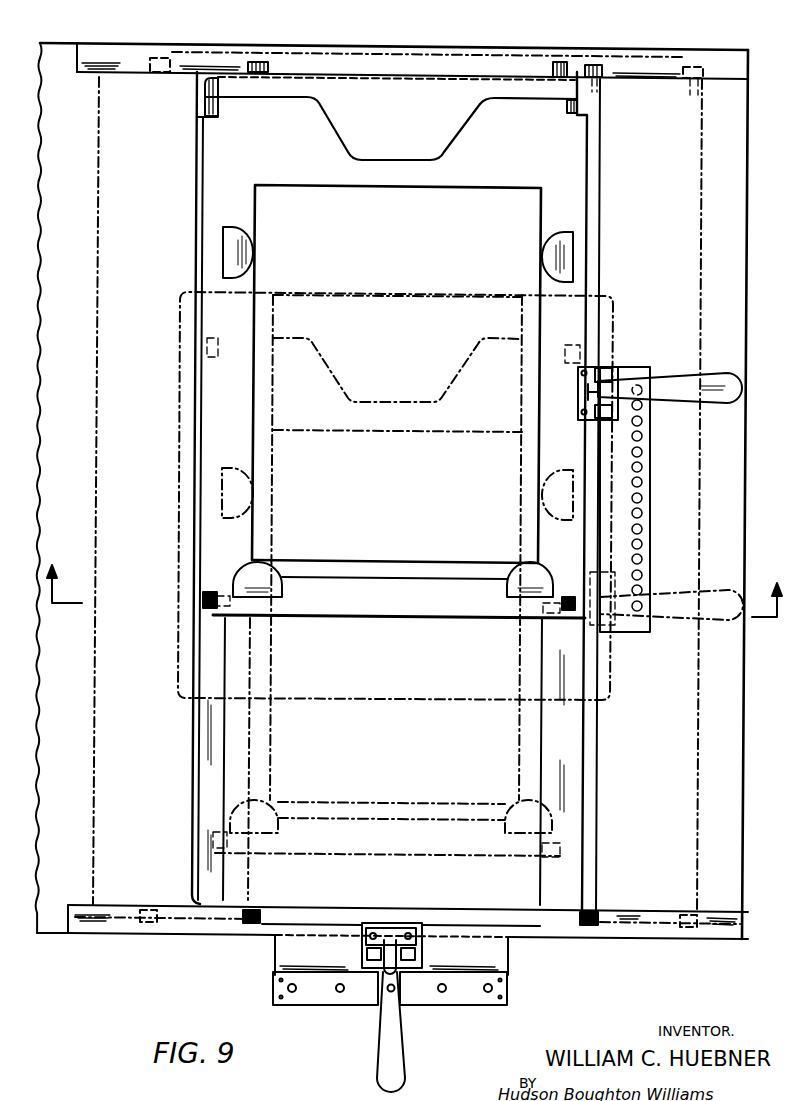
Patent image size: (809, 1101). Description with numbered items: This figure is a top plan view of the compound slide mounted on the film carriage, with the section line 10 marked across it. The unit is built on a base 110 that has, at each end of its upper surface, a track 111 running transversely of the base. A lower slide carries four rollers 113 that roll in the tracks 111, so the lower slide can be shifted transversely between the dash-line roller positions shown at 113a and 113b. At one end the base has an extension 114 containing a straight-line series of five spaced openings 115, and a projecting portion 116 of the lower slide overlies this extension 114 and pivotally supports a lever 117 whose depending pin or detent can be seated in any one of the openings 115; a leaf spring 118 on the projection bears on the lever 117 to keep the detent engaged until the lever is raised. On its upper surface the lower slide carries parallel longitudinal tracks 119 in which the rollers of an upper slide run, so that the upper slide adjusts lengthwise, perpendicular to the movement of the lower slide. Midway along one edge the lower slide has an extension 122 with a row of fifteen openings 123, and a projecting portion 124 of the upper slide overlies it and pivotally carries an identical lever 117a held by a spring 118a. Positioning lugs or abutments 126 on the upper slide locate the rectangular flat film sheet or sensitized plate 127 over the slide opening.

The section line 10- 10 is at (415, 580).
The base 110 is at (60, 838).
The track 111 is at (346, 62).
The rollers 113 is at (248, 926).
The dash line position of rollers 113a is at (150, 926).
The dash line position of rollers 113b is at (692, 928).
The extension 114 is at (314, 995).
The openings 115 is at (446, 993).
The projecting portion 116 is at (424, 945).
The lever 117 is at (400, 1060).
The lever 117a is at (672, 395).
The leaf spring 118 is at (410, 932).
The spring 118a is at (600, 418).
The tracks 119 is at (222, 92).
The extension 122 is at (612, 503).
The openings 123 is at (642, 548).
The projecting portion 124 is at (612, 367).
The positioning lugs or abutments 126 is at (243, 243).
The film sheet or sensitized plate 127 is at (466, 190).